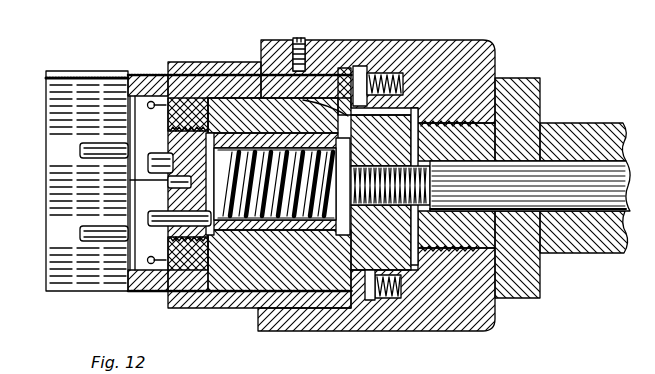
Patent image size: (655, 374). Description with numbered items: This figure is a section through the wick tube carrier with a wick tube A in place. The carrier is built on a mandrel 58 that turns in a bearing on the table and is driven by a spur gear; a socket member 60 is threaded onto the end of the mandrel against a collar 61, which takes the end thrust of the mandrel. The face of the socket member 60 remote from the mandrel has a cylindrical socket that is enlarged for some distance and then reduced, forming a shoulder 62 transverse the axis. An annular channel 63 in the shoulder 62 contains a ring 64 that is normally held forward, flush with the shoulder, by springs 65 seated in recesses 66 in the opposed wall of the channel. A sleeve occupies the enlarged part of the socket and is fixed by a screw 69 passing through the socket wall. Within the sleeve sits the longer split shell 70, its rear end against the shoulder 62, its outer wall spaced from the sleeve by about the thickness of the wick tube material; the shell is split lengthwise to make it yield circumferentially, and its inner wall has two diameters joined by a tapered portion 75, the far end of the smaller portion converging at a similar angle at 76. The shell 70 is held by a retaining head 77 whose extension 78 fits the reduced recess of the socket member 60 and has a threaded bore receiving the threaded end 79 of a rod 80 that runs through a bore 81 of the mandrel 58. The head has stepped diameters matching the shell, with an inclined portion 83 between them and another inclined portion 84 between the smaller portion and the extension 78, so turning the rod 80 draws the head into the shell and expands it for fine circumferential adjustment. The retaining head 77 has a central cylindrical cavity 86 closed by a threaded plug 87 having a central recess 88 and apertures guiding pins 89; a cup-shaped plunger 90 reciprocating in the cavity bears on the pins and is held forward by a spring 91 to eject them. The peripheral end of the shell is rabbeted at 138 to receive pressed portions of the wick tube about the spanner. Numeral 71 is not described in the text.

The wick tube A is at (112, 87).
The rabbeted portion 138 is at (125, 67).
The shell 70 is at (233, 80).
The inclined portion 75 is at (221, 86).
The socket member 60 is at (470, 37).
The recesses 66 is at (420, 324).
The inclined portion 83 is at (180, 87).
The retaining head 77 is at (273, 115).
The inclined portion 84 is at (327, 98).
The converging end portion 76 is at (340, 250).
The extension 78 is at (381, 192).
The collar 61 is at (513, 72).
The mandrel 58 is at (555, 118).
The spring 91 is at (237, 218).
The cylindrical cavity 86 is at (342, 220).
The plunger 90 is at (250, 213).
The shoulder 62 is at (383, 64).
The ring 64 is at (354, 60).
The springs 65 is at (420, 33).
The annular channel 63 is at (362, 292).
The screw 69 is at (297, 31).
The threaded end 79 is at (370, 159).
The rod 80 is at (616, 158).
The bore 81 is at (582, 205).
The mounting plate 71 is at (103, 181).
The plug 87 is at (160, 133).
The pins 89 is at (140, 153).
The central recess 88 is at (163, 193).